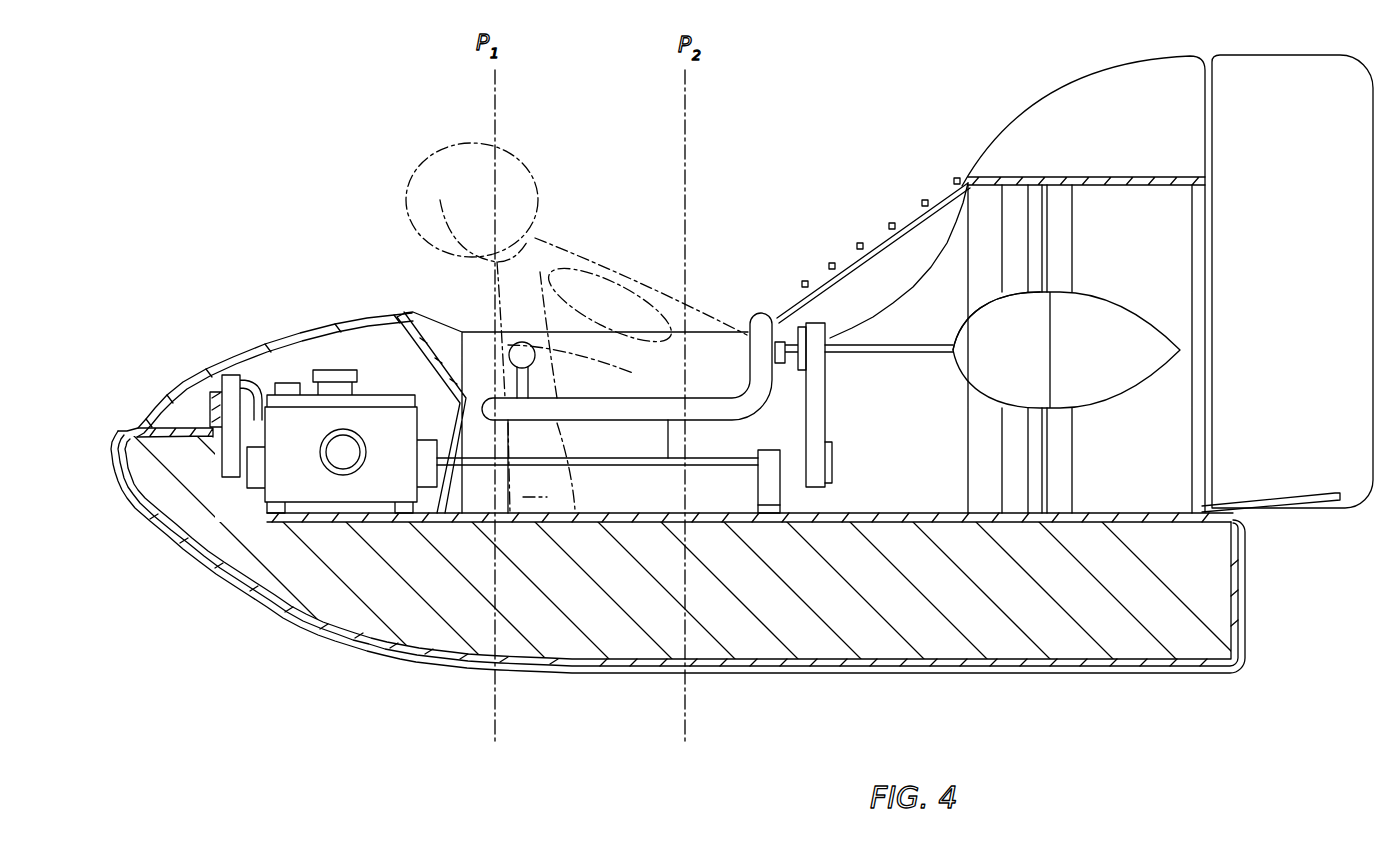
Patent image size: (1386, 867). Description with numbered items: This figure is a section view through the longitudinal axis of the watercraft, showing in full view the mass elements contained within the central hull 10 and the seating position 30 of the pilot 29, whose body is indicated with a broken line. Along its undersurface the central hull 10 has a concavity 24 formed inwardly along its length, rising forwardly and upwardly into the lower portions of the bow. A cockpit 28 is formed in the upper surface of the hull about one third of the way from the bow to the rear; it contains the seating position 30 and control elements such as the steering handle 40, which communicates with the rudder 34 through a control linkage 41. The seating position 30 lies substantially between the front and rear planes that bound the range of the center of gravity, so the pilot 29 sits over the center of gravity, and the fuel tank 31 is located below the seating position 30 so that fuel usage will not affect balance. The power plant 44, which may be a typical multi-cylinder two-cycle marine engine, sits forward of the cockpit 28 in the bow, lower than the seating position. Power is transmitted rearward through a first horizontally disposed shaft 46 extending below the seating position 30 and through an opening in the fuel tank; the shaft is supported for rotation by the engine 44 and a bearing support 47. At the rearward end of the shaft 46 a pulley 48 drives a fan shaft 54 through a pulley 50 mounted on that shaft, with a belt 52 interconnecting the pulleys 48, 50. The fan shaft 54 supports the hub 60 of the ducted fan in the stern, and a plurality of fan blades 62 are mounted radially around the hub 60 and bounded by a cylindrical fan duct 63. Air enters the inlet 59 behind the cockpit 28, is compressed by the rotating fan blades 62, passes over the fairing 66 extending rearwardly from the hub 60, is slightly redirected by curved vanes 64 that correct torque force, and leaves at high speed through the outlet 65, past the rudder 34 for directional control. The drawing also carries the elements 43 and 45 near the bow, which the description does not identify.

The central hull 10 is at (437, 630).
The concavity 24 is at (257, 602).
The cockpit 28 is at (478, 335).
The pilot 29 is at (627, 277).
The seating position 30 is at (657, 414).
The fuel tank 31 is at (668, 442).
The rudder 34 is at (1288, 154).
The steering handle 40 is at (627, 413).
The control linkage 41 is at (1333, 512).
The exhaust pipe 43 is at (210, 405).
The power plant 44 is at (343, 495).
The nose cover 45 is at (160, 407).
The first horizontally disposed shaft 46 is at (752, 468).
The bearing support 47 is at (758, 498).
The pulley 48 is at (833, 458).
The pulley 50 is at (826, 360).
The belt 52 is at (825, 413).
The fan shaft 54 is at (933, 310).
The inlet 59 is at (833, 260).
The hub 60 is at (980, 358).
The fan blades 62 is at (1013, 252).
The fan duct 63 is at (1103, 178).
The curved vanes 64 is at (1148, 242).
The outlet 65 is at (1236, 275).
The fairing 66 is at (1115, 359).